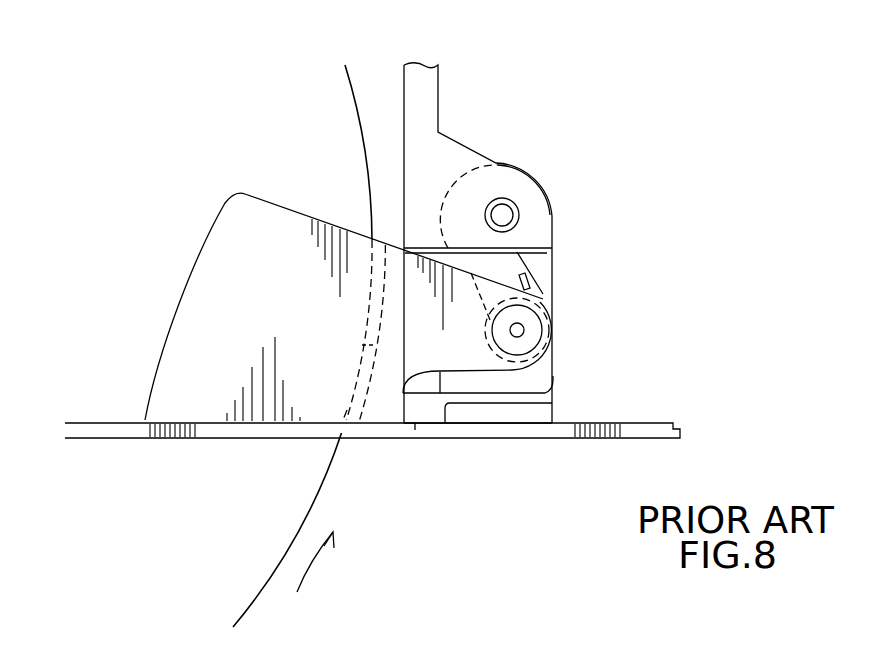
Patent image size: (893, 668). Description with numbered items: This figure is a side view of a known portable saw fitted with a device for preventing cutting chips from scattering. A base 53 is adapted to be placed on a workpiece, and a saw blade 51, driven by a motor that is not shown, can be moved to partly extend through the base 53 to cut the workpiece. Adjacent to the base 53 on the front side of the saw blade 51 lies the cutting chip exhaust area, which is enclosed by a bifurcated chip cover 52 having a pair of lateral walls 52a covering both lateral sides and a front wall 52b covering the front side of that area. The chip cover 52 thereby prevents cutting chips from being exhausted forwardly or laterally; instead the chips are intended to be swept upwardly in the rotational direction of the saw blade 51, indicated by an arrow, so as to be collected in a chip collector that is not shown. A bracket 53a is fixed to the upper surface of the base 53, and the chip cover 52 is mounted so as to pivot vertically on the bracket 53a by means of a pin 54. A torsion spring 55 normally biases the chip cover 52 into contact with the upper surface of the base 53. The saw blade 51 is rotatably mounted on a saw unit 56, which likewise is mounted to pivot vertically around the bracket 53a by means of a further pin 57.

The saw blade 51 is at (307, 482).
The chip cover 52 is at (318, 222).
The lateral walls 52a is at (235, 270).
The front wall 52b is at (362, 353).
The base 53 is at (645, 438).
The bracket 53a is at (553, 380).
The pin 54 is at (524, 325).
The torsion spring 55 is at (562, 327).
The saw unit 56 is at (445, 113).
The pin 57 is at (505, 214).